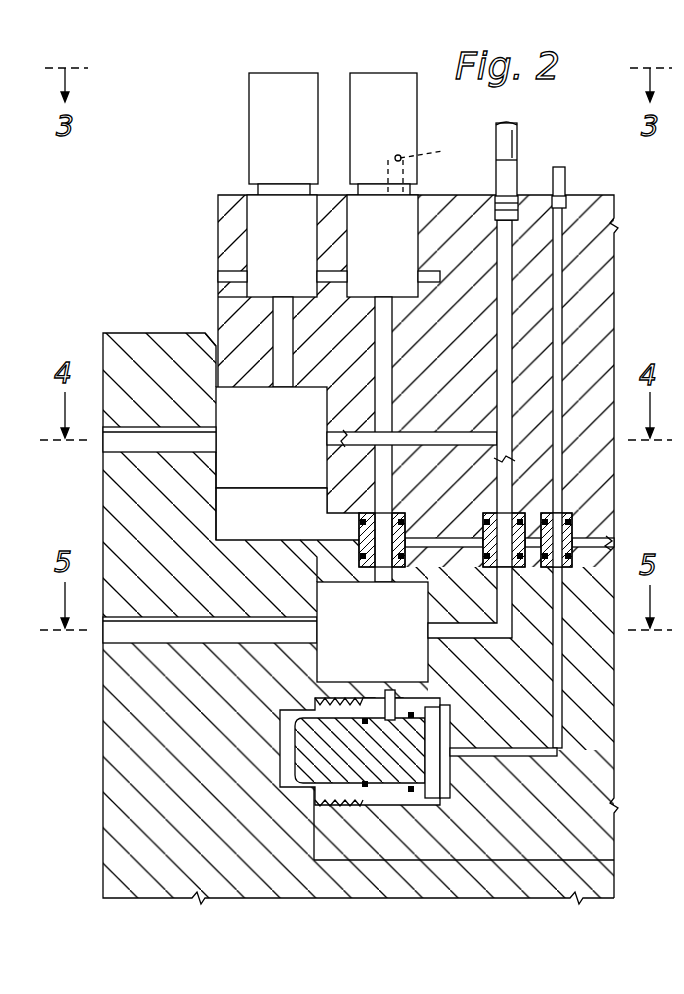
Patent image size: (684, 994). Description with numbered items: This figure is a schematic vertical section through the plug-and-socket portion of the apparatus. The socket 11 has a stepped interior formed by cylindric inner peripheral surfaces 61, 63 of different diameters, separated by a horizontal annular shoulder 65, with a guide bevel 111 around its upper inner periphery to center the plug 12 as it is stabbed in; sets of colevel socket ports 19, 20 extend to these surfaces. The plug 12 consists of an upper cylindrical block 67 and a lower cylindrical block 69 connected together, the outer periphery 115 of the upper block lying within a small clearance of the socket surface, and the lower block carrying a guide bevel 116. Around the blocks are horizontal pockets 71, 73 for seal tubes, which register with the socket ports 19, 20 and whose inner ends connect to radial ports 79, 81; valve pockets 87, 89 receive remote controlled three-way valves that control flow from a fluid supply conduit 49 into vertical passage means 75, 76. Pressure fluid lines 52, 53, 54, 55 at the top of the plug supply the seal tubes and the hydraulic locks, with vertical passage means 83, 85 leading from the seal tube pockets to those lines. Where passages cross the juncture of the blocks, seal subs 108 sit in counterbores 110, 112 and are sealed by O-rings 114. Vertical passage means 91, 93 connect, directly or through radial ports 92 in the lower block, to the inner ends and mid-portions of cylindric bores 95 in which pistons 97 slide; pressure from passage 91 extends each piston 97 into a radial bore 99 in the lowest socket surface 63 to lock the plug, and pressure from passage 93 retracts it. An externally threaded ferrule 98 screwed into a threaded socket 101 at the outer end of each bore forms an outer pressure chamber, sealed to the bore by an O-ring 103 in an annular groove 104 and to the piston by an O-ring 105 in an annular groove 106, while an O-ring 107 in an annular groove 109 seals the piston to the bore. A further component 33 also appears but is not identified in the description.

The socket 11 is at (120, 338).
The plug 12 is at (235, 192).
The socket port 19 is at (115, 440).
The socket port 20 is at (115, 630).
The solenoid 33 is at (262, 116).
The fluid supply conduit 49 is at (222, 277).
The pressure fluid line 52 is at (503, 181).
The pressure fluid line 53 is at (496, 132).
The pressure fluid line 54 is at (562, 186).
The pressure fluid line 55 is at (427, 168).
The cylindric inner peripheral surface 61 is at (210, 515).
The cylindric inner peripheral surface 63 is at (318, 862).
The horizontal annular shoulder 65 is at (250, 536).
The upper cylindrical block 67 is at (600, 528).
The lower cylindrical block 69 is at (600, 543).
The horizontal pocket 71 is at (325, 490).
The horizontal pocket 73 is at (335, 614).
The vertical passage means 75 is at (383, 300).
The vertical passage means 76 is at (283, 372).
The radial port 79 is at (336, 446).
The radial port 81 is at (428, 626).
The vertical passage means 83 is at (508, 283).
The vertical passage means 85 is at (500, 456).
The valve pocket 87 is at (252, 240).
The valve pocket 89 is at (355, 238).
The vertical passage means 91 is at (557, 255).
The radial port 92 is at (560, 746).
The vertical passage means 93 is at (390, 695).
The cylindric bore 95 is at (450, 795).
The piston 97 is at (300, 740).
The externally threaded ferrule 98 is at (333, 797).
The radial bore 99 is at (290, 722).
The threaded socket 101 is at (320, 782).
The O-ring 103 is at (370, 796).
The annular groove 104 is at (380, 715).
The O-ring 105 is at (410, 722).
The annular groove 106 is at (440, 752).
The O-ring 107 is at (425, 712).
The seal sub 108 is at (565, 520).
The annular groove 109 is at (430, 796).
The counterbore 110 is at (480, 532).
The guide bevel 111 is at (216, 335).
The counterbore 112 is at (390, 568).
The O-ring 114 is at (222, 503).
The outer periphery 115 is at (226, 297).
The guide bevel 116 is at (345, 870).